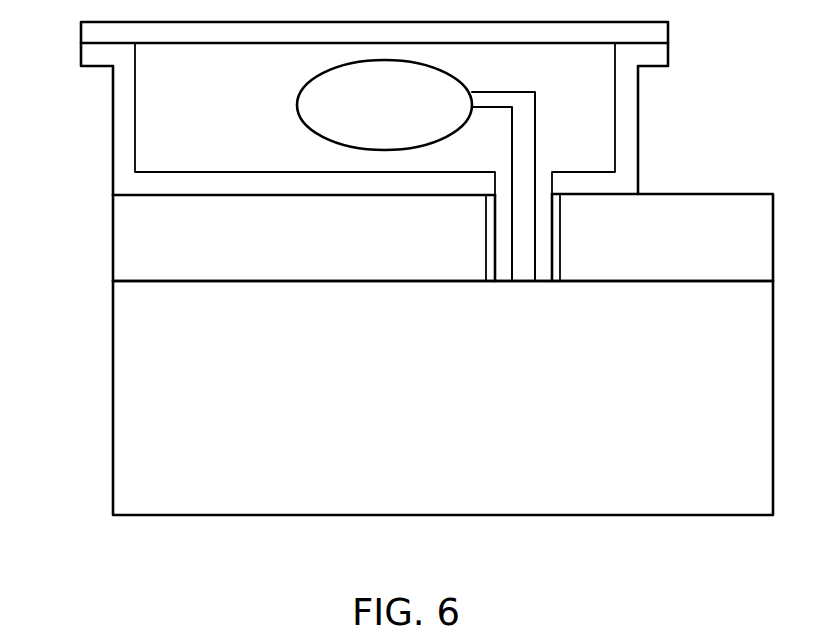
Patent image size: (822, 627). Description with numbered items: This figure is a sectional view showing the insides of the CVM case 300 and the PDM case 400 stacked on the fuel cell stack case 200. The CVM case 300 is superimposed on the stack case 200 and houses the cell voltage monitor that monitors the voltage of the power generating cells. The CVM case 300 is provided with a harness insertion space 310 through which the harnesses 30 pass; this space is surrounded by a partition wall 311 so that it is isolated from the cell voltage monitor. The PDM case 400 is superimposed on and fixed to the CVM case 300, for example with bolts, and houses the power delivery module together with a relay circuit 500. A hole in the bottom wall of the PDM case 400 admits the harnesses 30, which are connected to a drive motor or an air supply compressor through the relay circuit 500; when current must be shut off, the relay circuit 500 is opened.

The PDM case 400 is at (120, 121).
The CVM case 300 is at (118, 242).
The harness insertion space 310 is at (543, 222).
The partition wall 311 is at (544, 248).
The stack case 200 is at (118, 375).
The relay circuit 500 is at (305, 92).
The harness 30 is at (536, 137).